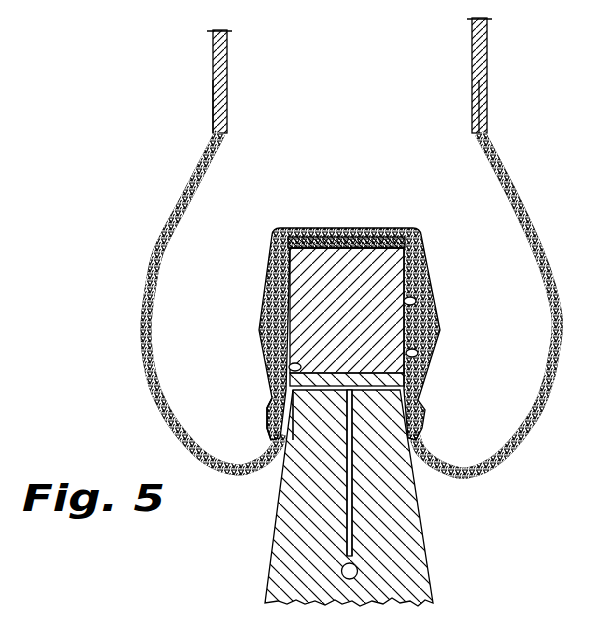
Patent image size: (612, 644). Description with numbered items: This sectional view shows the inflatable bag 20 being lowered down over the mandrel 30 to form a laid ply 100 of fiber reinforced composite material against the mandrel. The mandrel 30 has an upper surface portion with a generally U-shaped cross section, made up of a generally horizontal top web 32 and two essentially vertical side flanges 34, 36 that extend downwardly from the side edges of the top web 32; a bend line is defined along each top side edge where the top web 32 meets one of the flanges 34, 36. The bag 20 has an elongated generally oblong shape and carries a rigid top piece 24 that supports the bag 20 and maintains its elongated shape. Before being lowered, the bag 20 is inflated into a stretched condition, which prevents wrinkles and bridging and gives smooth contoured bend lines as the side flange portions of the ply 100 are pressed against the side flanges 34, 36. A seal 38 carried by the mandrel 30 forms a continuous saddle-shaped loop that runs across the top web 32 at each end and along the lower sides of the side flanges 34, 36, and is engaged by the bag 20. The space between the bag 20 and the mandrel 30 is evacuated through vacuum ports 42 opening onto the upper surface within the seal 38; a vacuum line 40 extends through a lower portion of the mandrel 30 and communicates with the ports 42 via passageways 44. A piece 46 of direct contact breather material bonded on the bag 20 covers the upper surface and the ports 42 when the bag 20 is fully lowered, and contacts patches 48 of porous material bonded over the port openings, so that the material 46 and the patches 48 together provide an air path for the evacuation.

The bag 20 is at (155, 240).
The top piece 24 is at (213, 84).
The mandrel 30 is at (365, 498).
The top web 32 is at (336, 240).
The side flange 34 is at (405, 322).
The side flange 36 is at (290, 369).
The seal 38 is at (270, 414).
The vacuum line 40 is at (358, 569).
The vacuum ports 42 is at (313, 392).
The passageways 44 is at (347, 532).
The piece of direct contact breather material 46 is at (416, 355).
The patches of porous material 48 is at (290, 380).
The ply 100 is at (415, 300).